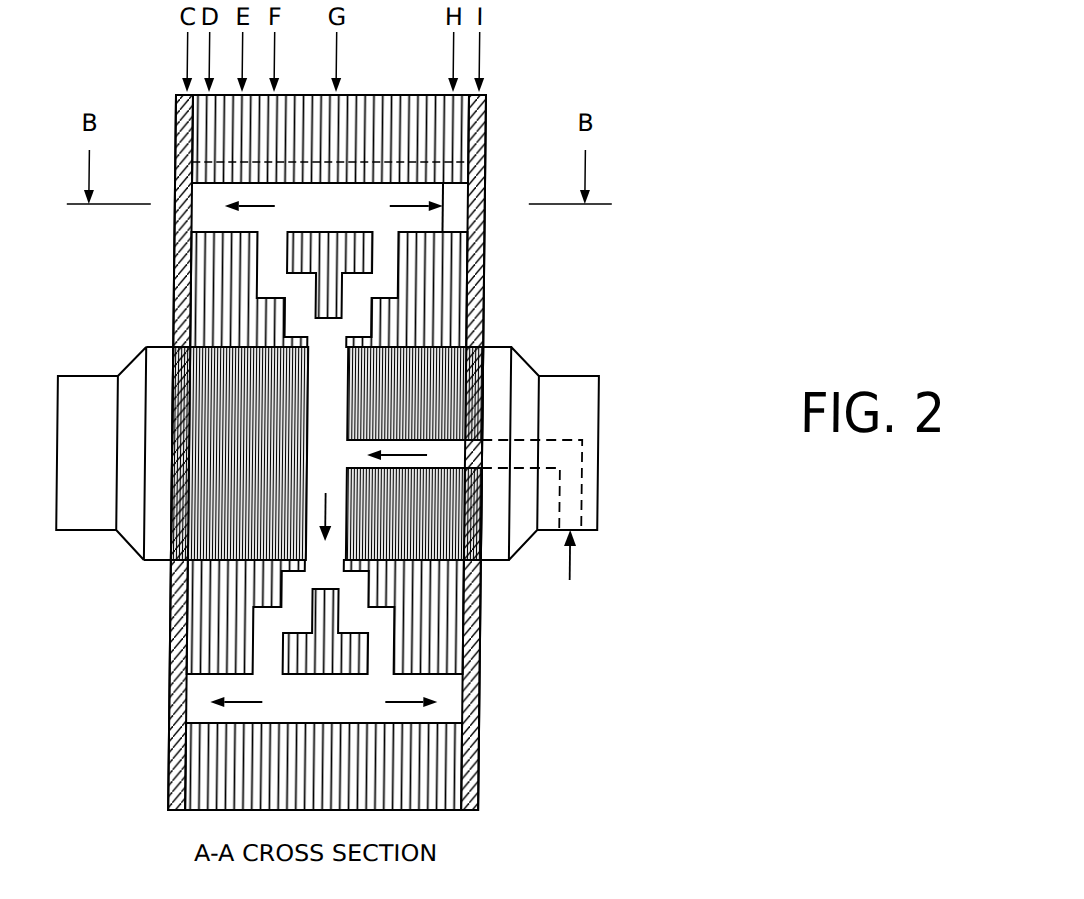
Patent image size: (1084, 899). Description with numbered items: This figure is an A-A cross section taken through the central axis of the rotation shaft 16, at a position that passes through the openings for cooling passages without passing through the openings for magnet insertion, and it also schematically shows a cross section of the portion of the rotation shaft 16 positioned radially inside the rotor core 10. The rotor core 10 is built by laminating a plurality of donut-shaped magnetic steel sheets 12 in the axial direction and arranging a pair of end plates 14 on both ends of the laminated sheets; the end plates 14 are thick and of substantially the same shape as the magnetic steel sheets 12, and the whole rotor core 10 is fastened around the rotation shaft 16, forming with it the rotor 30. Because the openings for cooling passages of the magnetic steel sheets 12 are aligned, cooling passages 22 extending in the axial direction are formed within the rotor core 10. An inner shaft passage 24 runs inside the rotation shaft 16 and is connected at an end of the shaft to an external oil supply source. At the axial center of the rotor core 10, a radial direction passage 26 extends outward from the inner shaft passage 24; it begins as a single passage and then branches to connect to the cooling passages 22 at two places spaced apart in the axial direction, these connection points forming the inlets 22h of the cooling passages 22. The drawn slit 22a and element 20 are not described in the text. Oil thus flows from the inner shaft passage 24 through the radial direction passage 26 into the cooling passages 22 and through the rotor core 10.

The rotor core 10 is at (508, 105).
The magnetic steel sheets 12 is at (443, 645).
The end plates 14 is at (485, 745).
The rotation shaft 16 is at (581, 413).
The end plate 20 is at (208, 234).
The cooling passages 22 is at (472, 218).
The slit 22a is at (432, 202).
The inlets 22h is at (262, 245).
The inner shaft passage 24 is at (431, 458).
The radial direction passage 26 is at (275, 291).
The rotor 30 is at (634, 559).